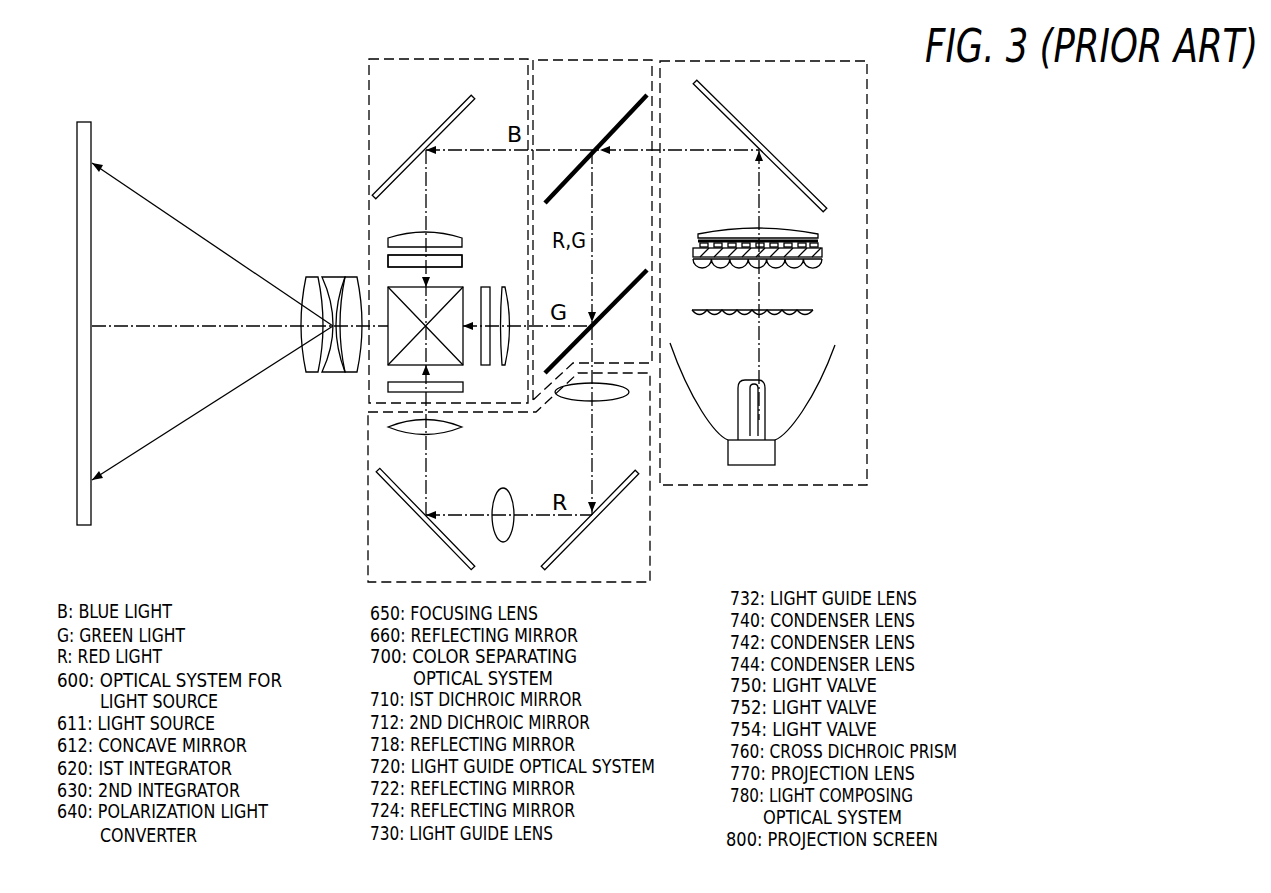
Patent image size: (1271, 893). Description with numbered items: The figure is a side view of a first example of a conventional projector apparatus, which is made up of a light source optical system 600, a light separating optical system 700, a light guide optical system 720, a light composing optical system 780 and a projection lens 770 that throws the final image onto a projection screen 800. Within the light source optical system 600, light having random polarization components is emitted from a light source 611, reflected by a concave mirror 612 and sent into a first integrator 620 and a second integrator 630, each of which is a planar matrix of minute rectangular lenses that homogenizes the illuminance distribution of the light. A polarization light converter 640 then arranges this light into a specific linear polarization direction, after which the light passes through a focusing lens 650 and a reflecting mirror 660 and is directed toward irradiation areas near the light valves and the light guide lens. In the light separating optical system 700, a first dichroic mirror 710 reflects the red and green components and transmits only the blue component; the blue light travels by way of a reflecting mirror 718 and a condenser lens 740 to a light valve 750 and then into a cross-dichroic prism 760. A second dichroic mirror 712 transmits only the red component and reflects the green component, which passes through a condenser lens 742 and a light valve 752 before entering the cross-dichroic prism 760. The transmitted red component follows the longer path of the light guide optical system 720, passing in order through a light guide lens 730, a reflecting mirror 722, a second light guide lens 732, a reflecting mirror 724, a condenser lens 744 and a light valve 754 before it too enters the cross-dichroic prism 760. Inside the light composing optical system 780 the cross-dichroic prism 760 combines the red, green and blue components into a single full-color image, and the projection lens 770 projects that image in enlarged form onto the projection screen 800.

The light source optical system 600 is at (788, 36).
The light source 611 is at (745, 437).
The concave mirror 612 is at (805, 408).
The first integrator 620 is at (813, 312).
The second integrator 630 is at (685, 258).
The polarization light converter 640 is at (823, 253).
The focusing lens 650 is at (795, 233).
The reflecting mirror 660 is at (805, 190).
The light separating optical system 700 is at (661, 36).
The first dichroic mirror 710 is at (616, 124).
The second dichroic mirror 712 is at (620, 292).
The reflecting mirror 718 is at (437, 118).
The light guide optical system 720 is at (652, 495).
The reflecting mirror 722 is at (607, 507).
The reflecting mirror 724 is at (413, 508).
The light guide lens 730 is at (612, 401).
The light guide lens 732 is at (510, 528).
The condenser lens 740 is at (415, 238).
The condenser lens 742 is at (508, 300).
The condenser lens 744 is at (433, 432).
The light valve 750 is at (447, 265).
The light valve 752 is at (484, 366).
The light valve 754 is at (392, 387).
The cross-dichroic prism 760 is at (403, 288).
The projection lens 770 is at (360, 266).
The light composing optical system 780 is at (435, 36).
The projection screen 800 is at (85, 143).